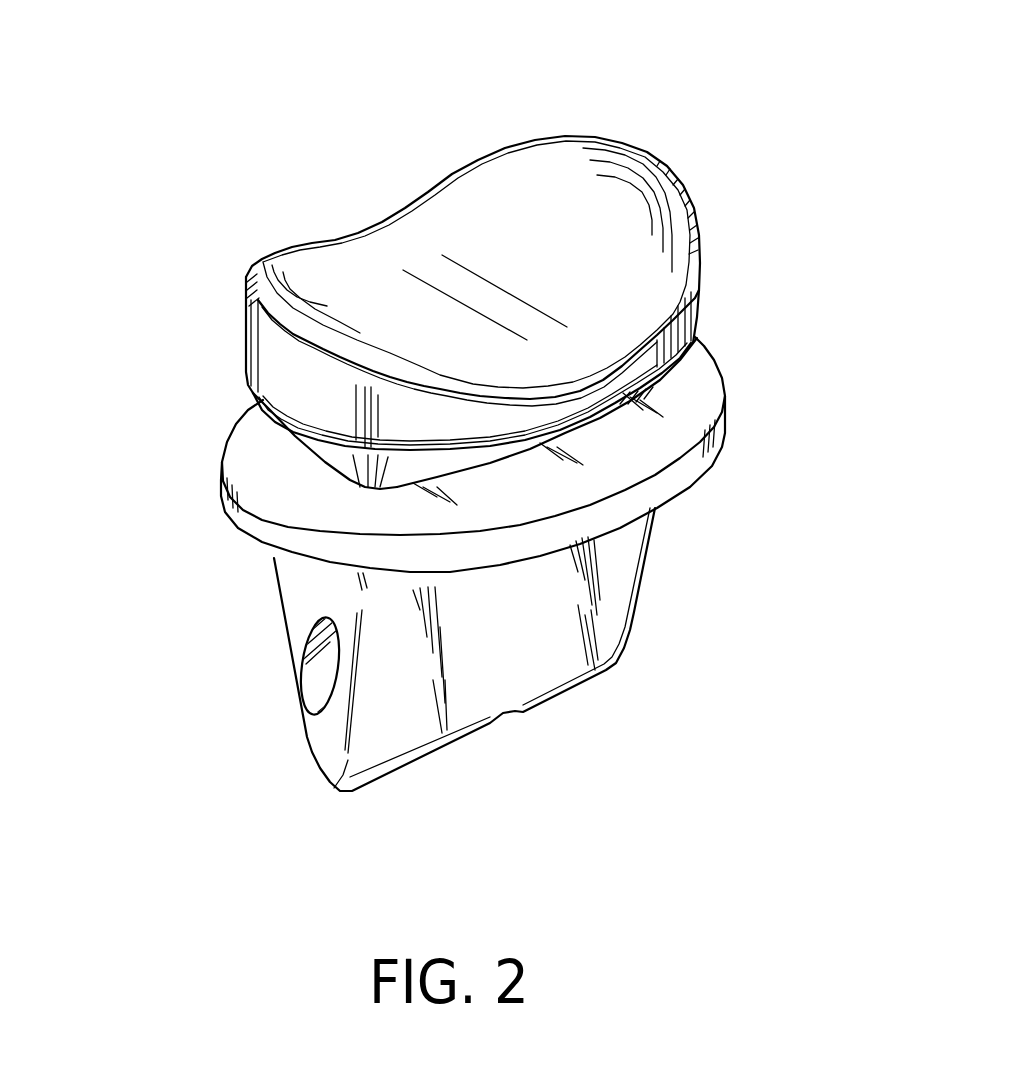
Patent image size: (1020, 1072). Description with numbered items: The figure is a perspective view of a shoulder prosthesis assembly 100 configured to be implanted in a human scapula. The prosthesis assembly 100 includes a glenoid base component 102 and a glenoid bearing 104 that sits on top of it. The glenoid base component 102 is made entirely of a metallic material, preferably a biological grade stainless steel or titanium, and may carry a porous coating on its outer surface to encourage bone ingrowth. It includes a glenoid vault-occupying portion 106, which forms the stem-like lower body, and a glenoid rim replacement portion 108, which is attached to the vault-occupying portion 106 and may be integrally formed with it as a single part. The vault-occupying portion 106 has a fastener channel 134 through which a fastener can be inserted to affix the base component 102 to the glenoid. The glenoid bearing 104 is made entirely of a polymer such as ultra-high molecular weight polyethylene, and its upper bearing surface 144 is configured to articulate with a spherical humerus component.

The shoulder prosthesis assembly 100 is at (156, 257).
The glenoid base component 102 is at (637, 615).
The glenoid bearing 104 is at (703, 285).
The glenoid vault-occupying portion 106 is at (618, 562).
The glenoid rim replacement portion 108 is at (720, 398).
The fastener channel 134 is at (320, 673).
The bearing surface 144 is at (560, 165).